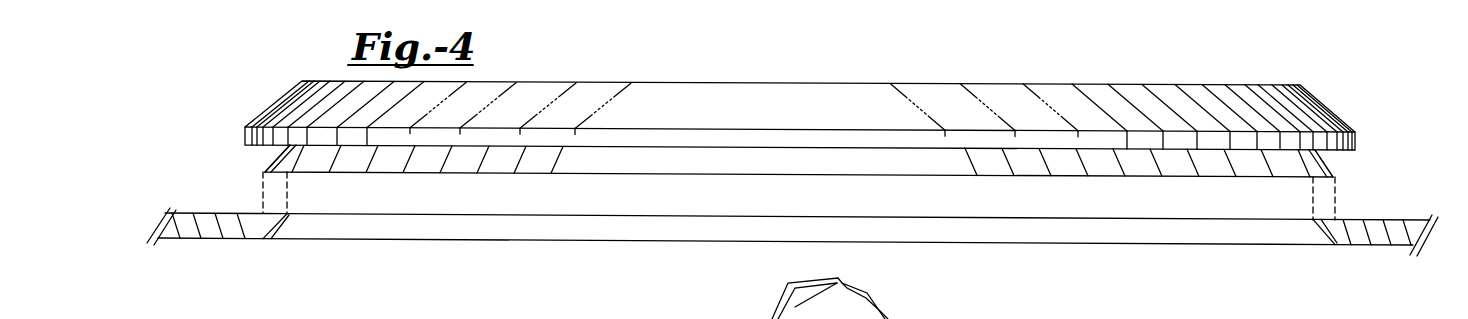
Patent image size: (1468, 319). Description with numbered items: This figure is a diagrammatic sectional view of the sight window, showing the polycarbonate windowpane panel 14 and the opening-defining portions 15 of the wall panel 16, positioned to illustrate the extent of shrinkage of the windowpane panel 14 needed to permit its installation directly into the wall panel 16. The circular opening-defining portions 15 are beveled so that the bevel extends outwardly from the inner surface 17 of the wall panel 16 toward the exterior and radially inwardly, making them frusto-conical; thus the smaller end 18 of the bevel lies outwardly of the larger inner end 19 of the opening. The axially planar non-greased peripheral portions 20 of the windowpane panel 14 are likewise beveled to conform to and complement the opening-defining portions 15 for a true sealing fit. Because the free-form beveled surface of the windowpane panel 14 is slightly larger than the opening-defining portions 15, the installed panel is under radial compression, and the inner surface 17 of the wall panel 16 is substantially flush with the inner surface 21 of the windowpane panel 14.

The windowpane panel 14 is at (1344, 107).
The opening-defining portions 15 is at (1316, 233).
The wall panel 16 is at (1386, 257).
The inner surface of the wall panel 17 is at (208, 240).
The smaller end of the bevel 18 is at (283, 212).
The larger inner end of the opening 19 is at (266, 240).
The peripheral portions of the windowpane panel 20 is at (272, 163).
The inner surface of the windowpane panel 21 is at (905, 175).